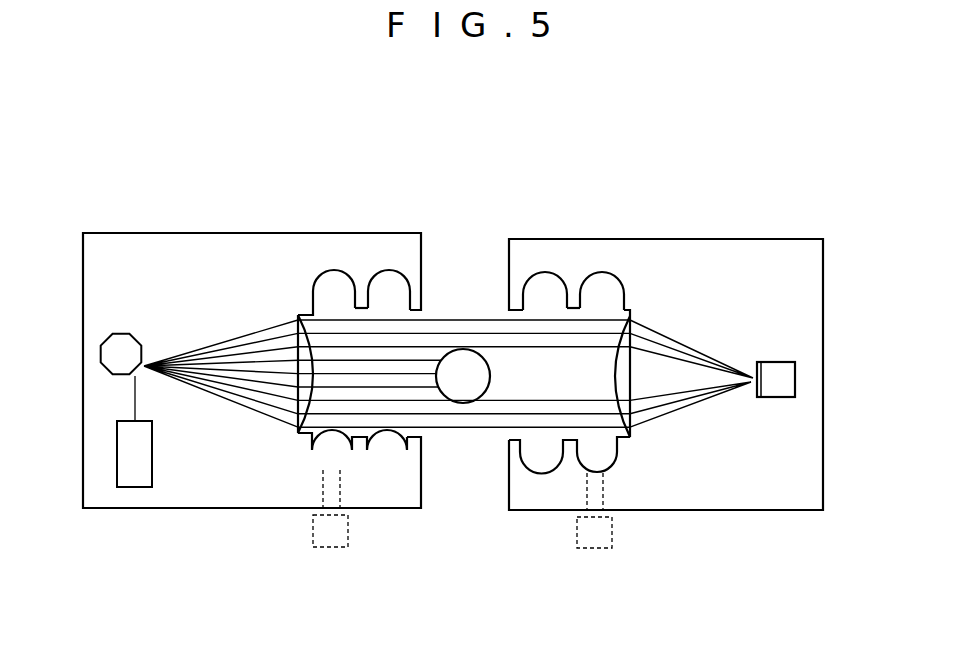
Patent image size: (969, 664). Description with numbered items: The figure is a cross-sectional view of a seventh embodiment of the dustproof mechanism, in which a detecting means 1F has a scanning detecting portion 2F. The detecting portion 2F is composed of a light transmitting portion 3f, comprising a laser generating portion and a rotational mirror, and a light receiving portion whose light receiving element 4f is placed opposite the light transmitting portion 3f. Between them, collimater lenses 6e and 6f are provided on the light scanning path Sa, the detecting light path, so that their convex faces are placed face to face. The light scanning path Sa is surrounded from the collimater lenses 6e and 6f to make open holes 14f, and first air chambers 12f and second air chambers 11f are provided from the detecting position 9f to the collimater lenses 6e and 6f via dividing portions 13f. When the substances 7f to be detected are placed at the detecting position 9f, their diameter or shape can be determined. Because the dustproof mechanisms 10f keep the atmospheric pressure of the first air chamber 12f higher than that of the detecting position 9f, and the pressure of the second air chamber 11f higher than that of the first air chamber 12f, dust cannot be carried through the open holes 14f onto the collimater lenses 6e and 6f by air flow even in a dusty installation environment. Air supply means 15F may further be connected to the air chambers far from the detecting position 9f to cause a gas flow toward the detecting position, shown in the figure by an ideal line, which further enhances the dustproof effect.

The detecting means 1F is at (434, 301).
The scanning detecting portion 2F is at (78, 257).
The light transmitting portion 3f is at (113, 388).
The light receiving element 4f is at (776, 360).
The collimater lens 6e is at (292, 412).
The collimater lens 6f is at (640, 418).
The substance to be detected 7f is at (465, 360).
The detecting position 9f is at (470, 474).
The dustproof mechanism 10f is at (389, 200).
The second air chamber 11f is at (328, 272).
The first air chamber 12f is at (390, 268).
The dividing portion 13f is at (358, 300).
The open hole 14f is at (424, 312).
The air supply means 15F is at (341, 560).
The light scanning path Sa is at (445, 442).